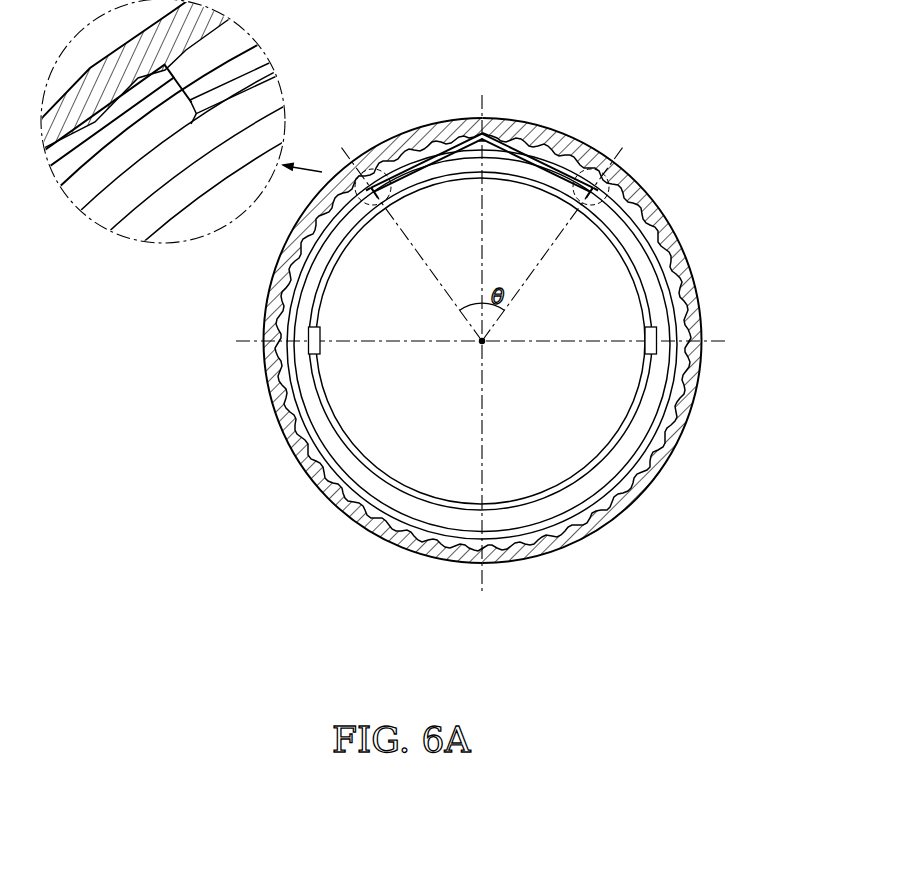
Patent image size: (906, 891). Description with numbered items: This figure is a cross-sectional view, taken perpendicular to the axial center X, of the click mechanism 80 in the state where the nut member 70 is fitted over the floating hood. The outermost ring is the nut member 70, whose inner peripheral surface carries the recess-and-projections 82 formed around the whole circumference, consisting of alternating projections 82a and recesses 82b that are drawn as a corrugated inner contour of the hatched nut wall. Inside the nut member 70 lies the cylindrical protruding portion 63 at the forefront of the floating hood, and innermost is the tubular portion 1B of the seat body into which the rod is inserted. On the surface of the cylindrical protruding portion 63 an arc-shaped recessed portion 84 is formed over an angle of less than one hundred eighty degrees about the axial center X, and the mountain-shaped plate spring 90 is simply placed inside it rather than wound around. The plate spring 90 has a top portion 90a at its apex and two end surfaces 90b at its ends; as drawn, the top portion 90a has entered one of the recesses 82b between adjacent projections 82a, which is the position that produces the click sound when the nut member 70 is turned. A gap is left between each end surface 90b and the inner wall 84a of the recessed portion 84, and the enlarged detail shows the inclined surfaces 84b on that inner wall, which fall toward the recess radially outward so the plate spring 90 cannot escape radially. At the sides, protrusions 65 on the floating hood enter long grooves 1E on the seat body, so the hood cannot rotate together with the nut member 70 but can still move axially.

The click mechanism 80 is at (556, 116).
The recess-and-projections 82 is at (752, 183).
The projections 82a is at (465, 118).
The recesses 82b is at (648, 197).
The arc-shaped recessed portion 84 is at (510, 150).
The inner wall of the recessed portion 84a is at (372, 180).
The inclined surfaces 84b is at (170, 82).
The plate spring 90 is at (240, 88).
The top portion 90a is at (478, 142).
The end surfaces 90b is at (372, 205).
The nut member 70 is at (628, 178).
The cylindrical protruding portion 63 is at (303, 300).
The protrusions 65 is at (312, 333).
The long grooves 1E is at (482, 358).
The tubular portion 1B is at (327, 423).
The axial center X is at (485, 345).